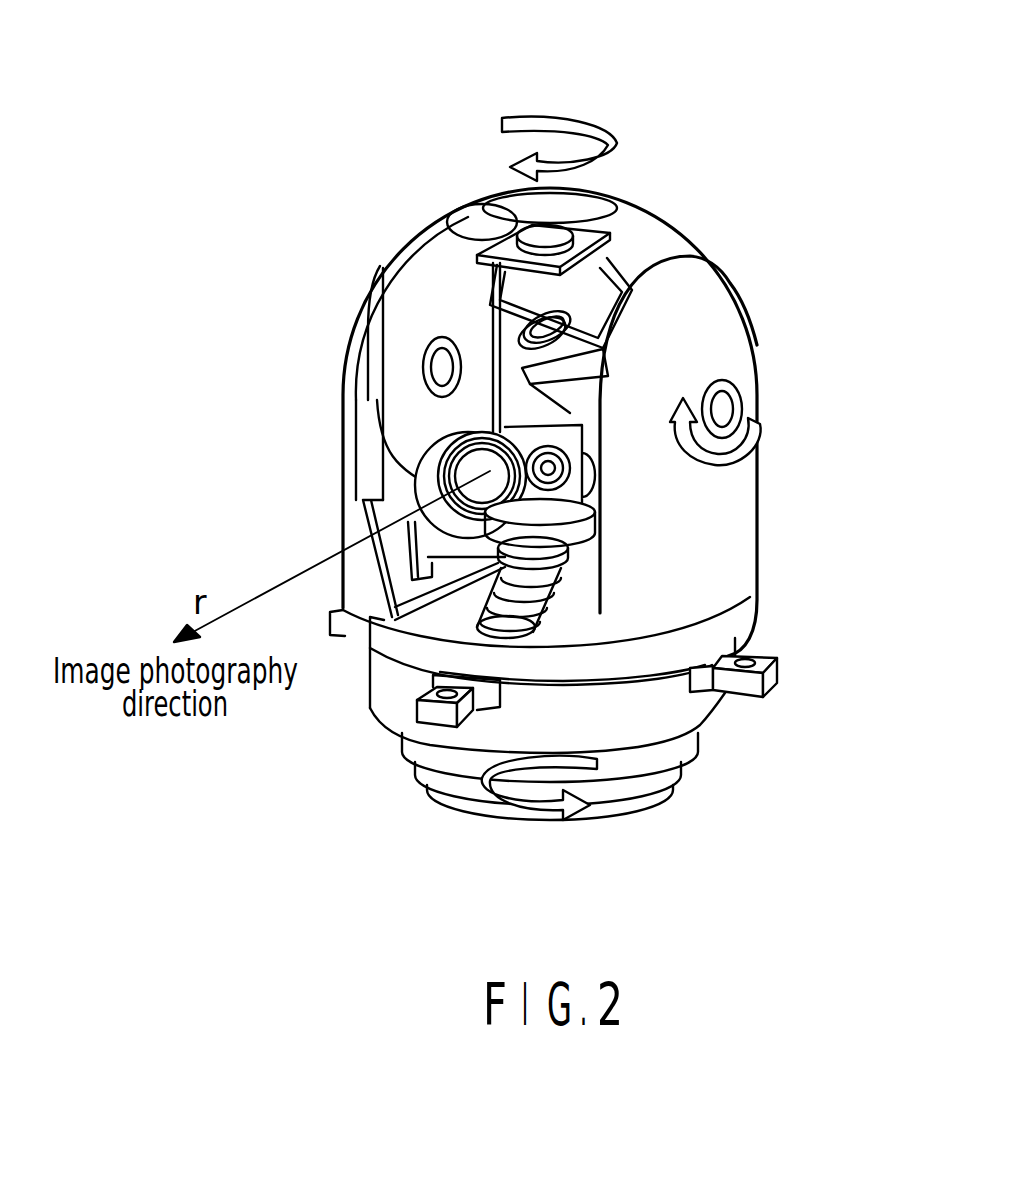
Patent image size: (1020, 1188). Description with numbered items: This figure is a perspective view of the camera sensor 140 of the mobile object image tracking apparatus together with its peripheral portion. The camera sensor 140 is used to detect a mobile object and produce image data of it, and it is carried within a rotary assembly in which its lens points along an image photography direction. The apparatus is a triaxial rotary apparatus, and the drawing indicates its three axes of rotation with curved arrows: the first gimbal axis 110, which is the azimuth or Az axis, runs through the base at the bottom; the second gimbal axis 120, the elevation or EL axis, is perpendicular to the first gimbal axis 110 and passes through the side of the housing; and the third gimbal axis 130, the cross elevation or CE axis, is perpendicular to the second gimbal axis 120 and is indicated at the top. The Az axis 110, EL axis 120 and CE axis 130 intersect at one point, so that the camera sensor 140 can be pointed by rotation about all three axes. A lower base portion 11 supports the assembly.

The third gimbal axis 130 is at (548, 125).
The second gimbal axis 120 is at (756, 430).
The first gimbal axis 110 is at (537, 805).
The camera sensor 140 is at (488, 472).
The base housing 11 is at (637, 803).